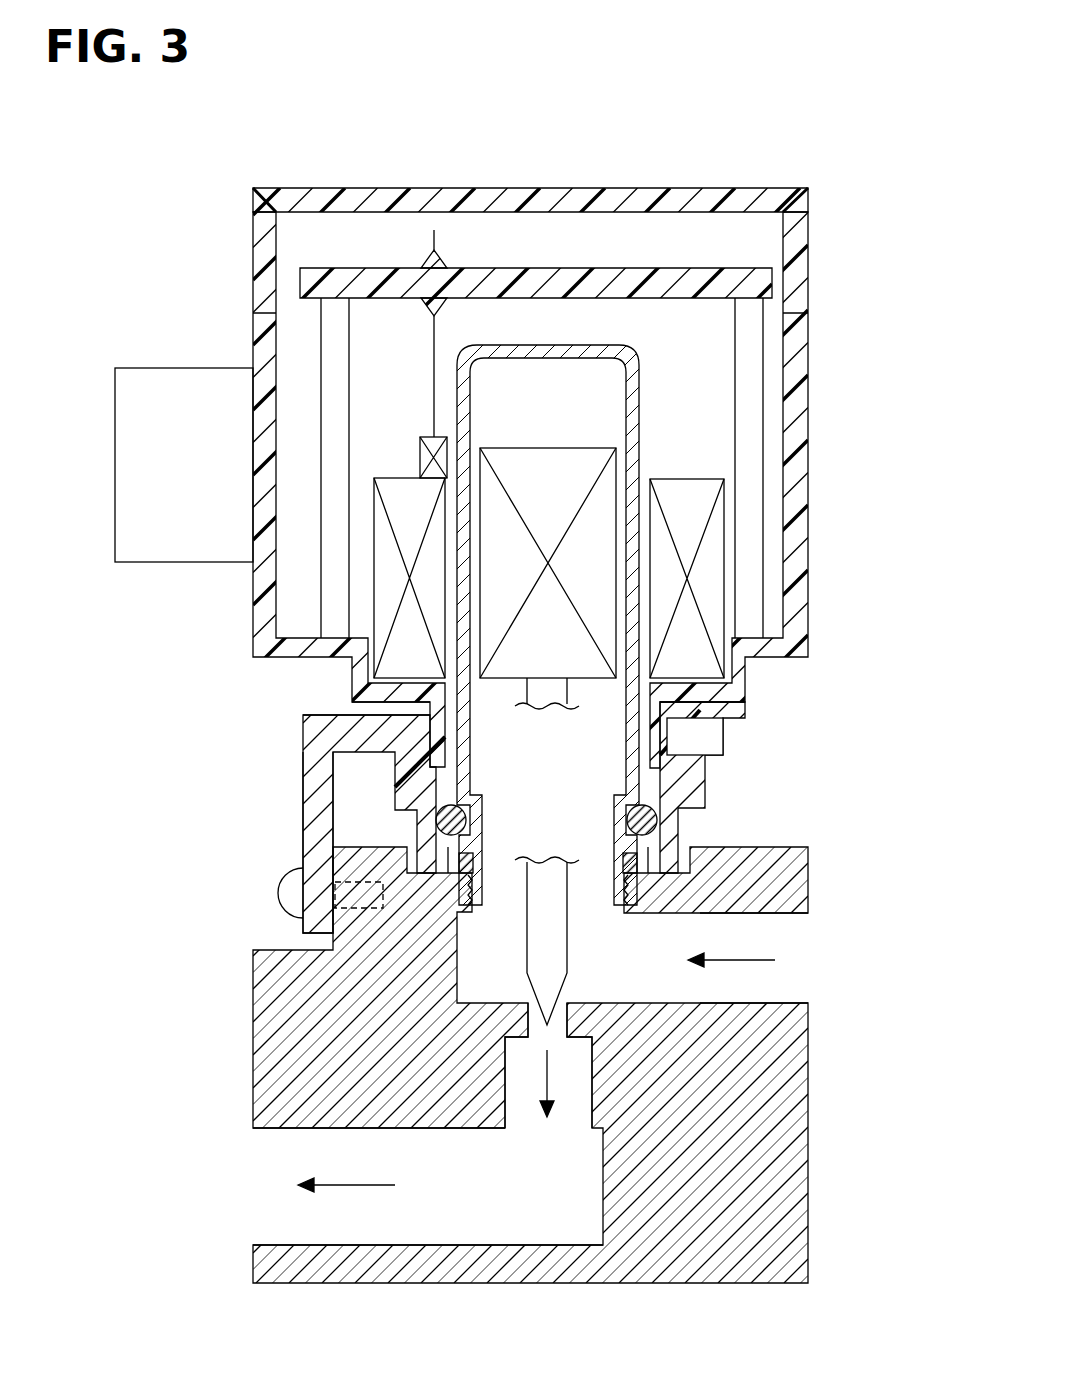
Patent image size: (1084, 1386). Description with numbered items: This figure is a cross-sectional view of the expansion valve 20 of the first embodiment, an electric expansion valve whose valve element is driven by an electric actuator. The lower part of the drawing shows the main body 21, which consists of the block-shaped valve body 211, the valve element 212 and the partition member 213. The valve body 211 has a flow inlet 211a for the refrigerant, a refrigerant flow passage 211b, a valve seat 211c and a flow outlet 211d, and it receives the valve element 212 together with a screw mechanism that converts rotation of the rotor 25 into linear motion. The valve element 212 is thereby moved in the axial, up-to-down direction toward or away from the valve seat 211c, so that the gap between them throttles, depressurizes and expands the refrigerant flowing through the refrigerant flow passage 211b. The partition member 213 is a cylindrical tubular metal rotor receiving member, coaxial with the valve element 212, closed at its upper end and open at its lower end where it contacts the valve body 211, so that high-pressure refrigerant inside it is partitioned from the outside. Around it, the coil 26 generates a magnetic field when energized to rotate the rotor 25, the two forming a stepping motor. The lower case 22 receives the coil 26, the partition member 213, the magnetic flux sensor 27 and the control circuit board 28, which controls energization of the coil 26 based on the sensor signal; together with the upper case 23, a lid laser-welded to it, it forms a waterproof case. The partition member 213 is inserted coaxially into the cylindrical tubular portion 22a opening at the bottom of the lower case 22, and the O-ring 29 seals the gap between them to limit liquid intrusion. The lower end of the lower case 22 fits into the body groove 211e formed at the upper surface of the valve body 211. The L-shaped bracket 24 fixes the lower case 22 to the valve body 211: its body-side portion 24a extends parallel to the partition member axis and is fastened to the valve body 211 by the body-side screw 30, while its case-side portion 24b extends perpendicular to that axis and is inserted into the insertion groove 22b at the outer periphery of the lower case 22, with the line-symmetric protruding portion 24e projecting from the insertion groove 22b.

The expansion valve 20 is at (672, 152).
The main body 21 is at (808, 1082).
The valve body 211 is at (808, 1163).
The flow inlet 211a is at (808, 960).
The refrigerant flow passage 211b is at (523, 1088).
The valve seat 211c is at (527, 1030).
The flow outlet 211d is at (253, 1188).
The body groove 211e is at (393, 963).
The valve element 212 is at (575, 940).
The partition member 213 is at (632, 396).
The lower case 22 is at (808, 352).
The cylindrical tubular portion 22a is at (430, 782).
The insertion groove 22b is at (405, 742).
The upper case 23 is at (808, 262).
The bracket 24 is at (303, 778).
The body-side portion 24a is at (300, 797).
The case-side portion 24b is at (727, 718).
The protruding portion 24e is at (352, 716).
The rotor 25 is at (585, 447).
The coil 26 is at (375, 598).
The magnetic flux sensor 27 is at (420, 452).
The control circuit board 28 is at (388, 268).
The O-ring 29 is at (660, 820).
The body-side screw 30 is at (283, 887).